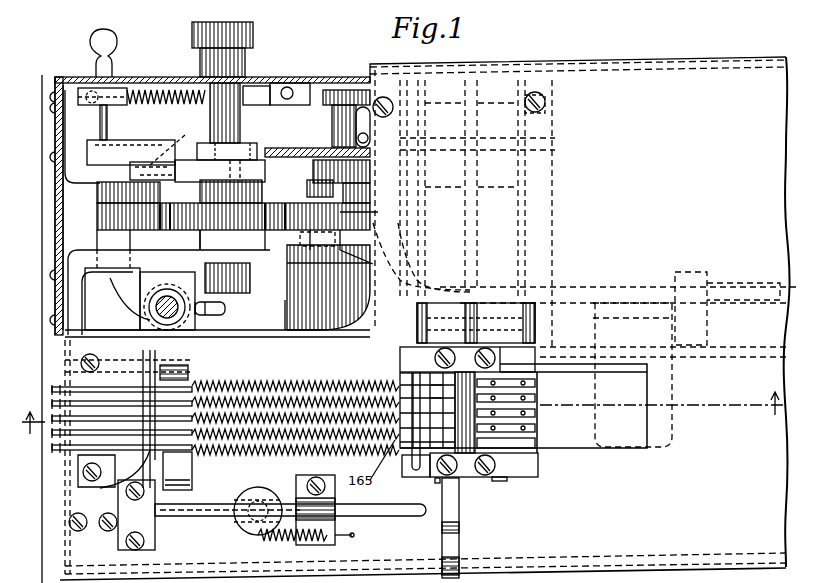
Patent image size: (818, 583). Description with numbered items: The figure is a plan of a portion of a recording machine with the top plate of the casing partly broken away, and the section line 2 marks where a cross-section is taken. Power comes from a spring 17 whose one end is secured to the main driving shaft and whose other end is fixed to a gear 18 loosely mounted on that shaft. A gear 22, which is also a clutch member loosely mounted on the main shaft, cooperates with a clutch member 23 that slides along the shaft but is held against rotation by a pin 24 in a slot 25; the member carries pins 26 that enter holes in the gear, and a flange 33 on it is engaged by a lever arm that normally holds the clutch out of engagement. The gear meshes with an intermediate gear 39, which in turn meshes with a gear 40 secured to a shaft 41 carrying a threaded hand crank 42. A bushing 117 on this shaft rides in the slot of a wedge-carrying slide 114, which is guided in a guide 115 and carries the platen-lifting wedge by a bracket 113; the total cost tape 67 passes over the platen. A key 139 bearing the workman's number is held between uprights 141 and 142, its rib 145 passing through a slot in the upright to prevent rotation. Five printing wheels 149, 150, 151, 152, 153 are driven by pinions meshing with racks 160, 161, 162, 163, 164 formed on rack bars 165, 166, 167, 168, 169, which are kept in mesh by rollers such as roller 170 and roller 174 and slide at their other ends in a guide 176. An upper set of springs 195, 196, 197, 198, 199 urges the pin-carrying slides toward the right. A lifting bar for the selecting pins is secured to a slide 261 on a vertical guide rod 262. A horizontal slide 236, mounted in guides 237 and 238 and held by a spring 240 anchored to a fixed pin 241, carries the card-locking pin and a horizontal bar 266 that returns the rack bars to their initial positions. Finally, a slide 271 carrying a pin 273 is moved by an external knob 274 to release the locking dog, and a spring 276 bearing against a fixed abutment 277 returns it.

The section line 2- 2 is at (403, 411).
The spring 17 is at (292, 297).
The gear 18 is at (365, 261).
The gear 22 is at (367, 212).
The clutch member 23 is at (355, 167).
The pin 24 is at (360, 138).
The slot 25 is at (357, 114).
The pins 26 is at (370, 192).
The flange 33 is at (340, 100).
The intermediate gear 39 is at (58, 218).
The gear 40 is at (240, 278).
The shaft 41 is at (240, 115).
The hand crank 42 is at (253, 30).
The total cost tape 67 is at (640, 440).
The bracket 113 is at (593, 335).
The wedge-carrying slide 114 is at (578, 287).
The guide 115 is at (707, 280).
The bushing 117 is at (200, 248).
The key 139 is at (459, 540).
The upright 141 is at (536, 350).
The upright 142 is at (540, 470).
The rib 145 is at (437, 485).
The printing wheel 149 is at (535, 446).
The printing wheel 150 is at (537, 428).
The printing wheel 151 is at (537, 411).
The printing wheel 152 is at (537, 398).
The printing wheel 153 is at (537, 383).
The rack 160 is at (415, 470).
The rack 161 is at (402, 470).
The rack 162 is at (410, 373).
The rack 163 is at (410, 345).
The rack 164 is at (405, 330).
The rack bar 165 is at (75, 433).
The rack bar 166 is at (95, 447).
The rack bar 167 is at (70, 418).
The rack bar 168 is at (55, 389).
The rack bar 169 is at (95, 388).
The roller 170 is at (470, 460).
The roller 174 is at (455, 345).
The guide 176 is at (103, 487).
The spring 195 is at (240, 445).
The spring 196 is at (178, 471).
The spring 197 is at (315, 400).
The spring 198 is at (265, 331).
The spring 199 is at (225, 386).
The horizontal slide 236 is at (225, 517).
The guide 237 is at (120, 530).
The guide 238 is at (338, 527).
The spring 240 is at (290, 540).
The fixed pin 241 is at (352, 538).
The slide 261 is at (152, 308).
The vertical guide rod 262 is at (158, 312).
The horizontal bar 266 is at (275, 485).
The slide 271 is at (113, 88).
The pin 273 is at (107, 125).
The knob 274 is at (108, 48).
The spring 276 is at (152, 88).
The fixed abutment 277 is at (248, 98).